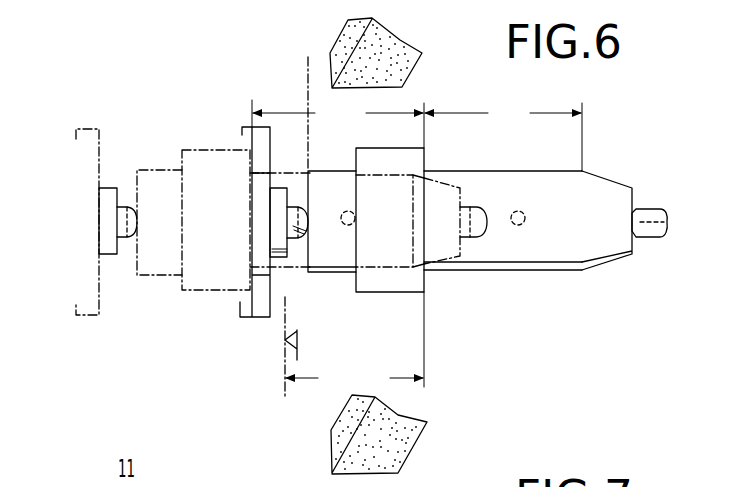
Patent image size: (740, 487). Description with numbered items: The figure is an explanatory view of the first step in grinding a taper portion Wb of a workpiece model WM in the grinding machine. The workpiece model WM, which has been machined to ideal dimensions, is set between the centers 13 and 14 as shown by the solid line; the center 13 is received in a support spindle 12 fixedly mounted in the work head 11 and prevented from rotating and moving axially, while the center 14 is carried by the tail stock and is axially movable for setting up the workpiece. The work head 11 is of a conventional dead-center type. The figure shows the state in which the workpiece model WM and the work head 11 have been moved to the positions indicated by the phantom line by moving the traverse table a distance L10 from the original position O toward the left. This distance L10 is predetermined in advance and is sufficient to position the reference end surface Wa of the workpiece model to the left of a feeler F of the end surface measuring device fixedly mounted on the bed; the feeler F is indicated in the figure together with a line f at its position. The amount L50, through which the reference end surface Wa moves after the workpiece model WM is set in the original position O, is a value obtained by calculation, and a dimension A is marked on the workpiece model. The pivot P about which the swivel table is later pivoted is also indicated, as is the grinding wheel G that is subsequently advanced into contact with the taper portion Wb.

The work head 11 is at (243, 128).
The support spindle 12 is at (107, 248).
The center 13 is at (305, 224).
The center 14 is at (655, 210).
The original position O is at (308, 97).
The reference end surface Wa is at (270, 280).
The taper portion Wb is at (607, 247).
The workpiece model WM is at (393, 296).
The pivot P is at (356, 215).
The grinding wheel G is at (405, 60).
The feeler F is at (298, 340).
The feed position line f is at (285, 346).
The dimension A is at (503, 135).
The distance L10 is at (338, 115).
The amount L50 is at (354, 343).